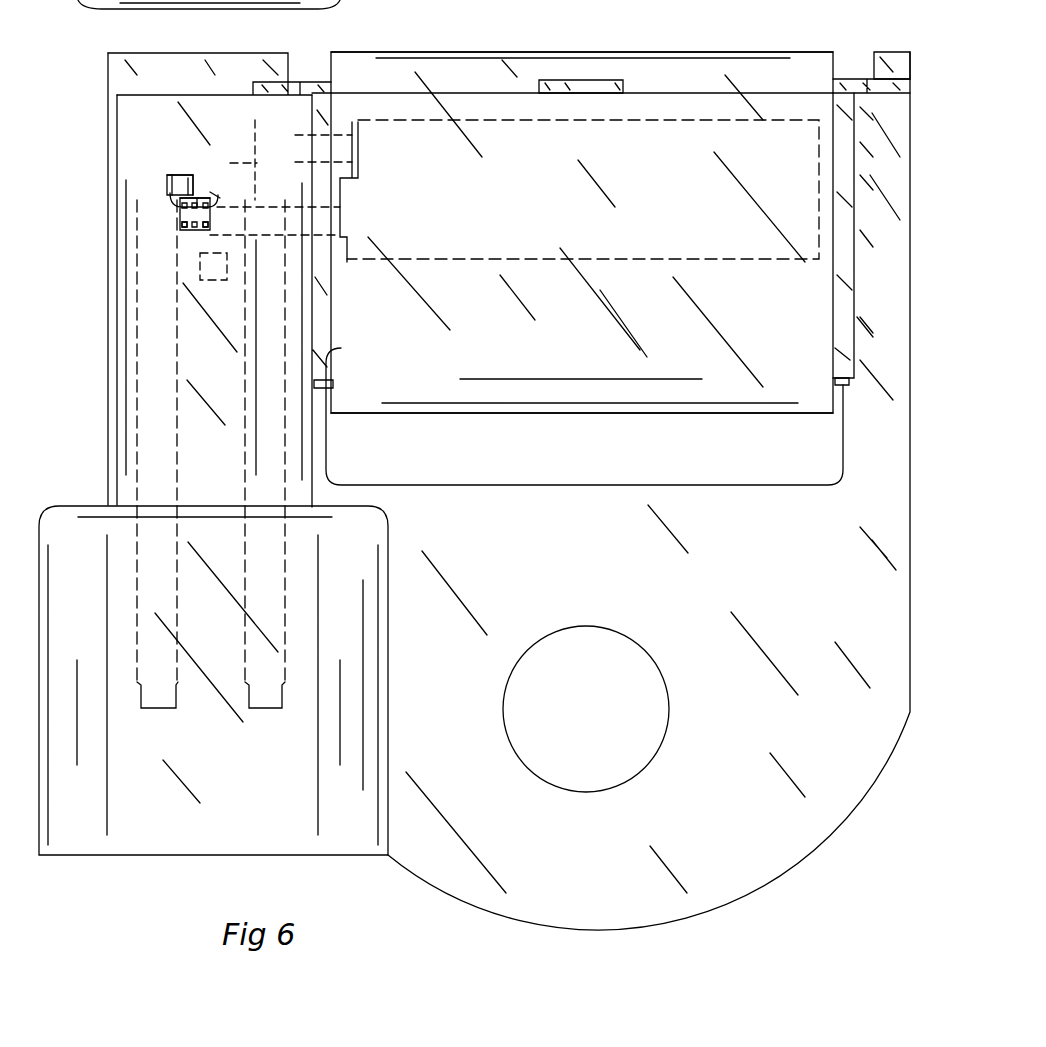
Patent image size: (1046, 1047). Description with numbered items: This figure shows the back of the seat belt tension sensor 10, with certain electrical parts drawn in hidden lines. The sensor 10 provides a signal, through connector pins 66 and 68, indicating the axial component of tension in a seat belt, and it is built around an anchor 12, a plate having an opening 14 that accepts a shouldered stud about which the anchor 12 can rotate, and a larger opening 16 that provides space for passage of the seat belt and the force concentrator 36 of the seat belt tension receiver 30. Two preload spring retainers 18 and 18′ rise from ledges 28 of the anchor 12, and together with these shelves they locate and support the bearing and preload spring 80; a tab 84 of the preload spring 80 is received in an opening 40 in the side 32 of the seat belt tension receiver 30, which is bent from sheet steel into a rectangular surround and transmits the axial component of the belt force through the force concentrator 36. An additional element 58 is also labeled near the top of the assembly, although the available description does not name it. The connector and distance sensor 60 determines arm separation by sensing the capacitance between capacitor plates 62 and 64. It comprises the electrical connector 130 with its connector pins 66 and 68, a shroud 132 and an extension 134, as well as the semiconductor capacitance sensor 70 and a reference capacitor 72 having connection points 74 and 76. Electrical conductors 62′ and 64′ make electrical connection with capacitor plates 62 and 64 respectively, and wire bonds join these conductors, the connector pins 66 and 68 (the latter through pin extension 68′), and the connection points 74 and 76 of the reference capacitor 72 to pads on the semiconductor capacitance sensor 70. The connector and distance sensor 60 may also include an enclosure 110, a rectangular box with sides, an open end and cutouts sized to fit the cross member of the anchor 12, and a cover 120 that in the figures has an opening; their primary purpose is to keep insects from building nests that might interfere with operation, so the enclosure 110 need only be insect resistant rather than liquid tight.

The seat belt tension sensor 10 is at (871, 822).
The anchor 12 is at (694, 808).
The opening 14 is at (569, 733).
The opening 16 is at (633, 468).
The preload spring retainer 18 is at (898, 52).
The preload spring retainer 18′ is at (156, 86).
The ledge 28 is at (308, 80).
The seat belt tension receiver 30 is at (669, 358).
The side 32 is at (445, 324).
The force concentrator 36 is at (445, 413).
The opening 40 is at (557, 82).
The top edge 58 is at (418, 52).
The connector and distance sensor 60 is at (422, 442).
The capacitor plate 62 is at (464, 221).
The electrical conductor 62′ is at (320, 222).
The capacitor plate 64 is at (355, 167).
The electrical conductor 64′ is at (300, 145).
The connector pin 66 is at (133, 330).
The connector pin 68 is at (260, 335).
The pin extension 68′ is at (215, 273).
The semiconductor capacitance sensor 70 is at (180, 218).
The reference capacitor 72 is at (160, 150).
The connection point 74 is at (168, 185).
The connection point 76 is at (190, 178).
The bearing and preload spring 80 is at (835, 85).
The tab 84 is at (578, 82).
The enclosure 110 is at (833, 305).
The cover 120 is at (326, 380).
The electrical connector 130 is at (196, 874).
The shroud 132 is at (224, 796).
The extension 134 is at (108, 423).